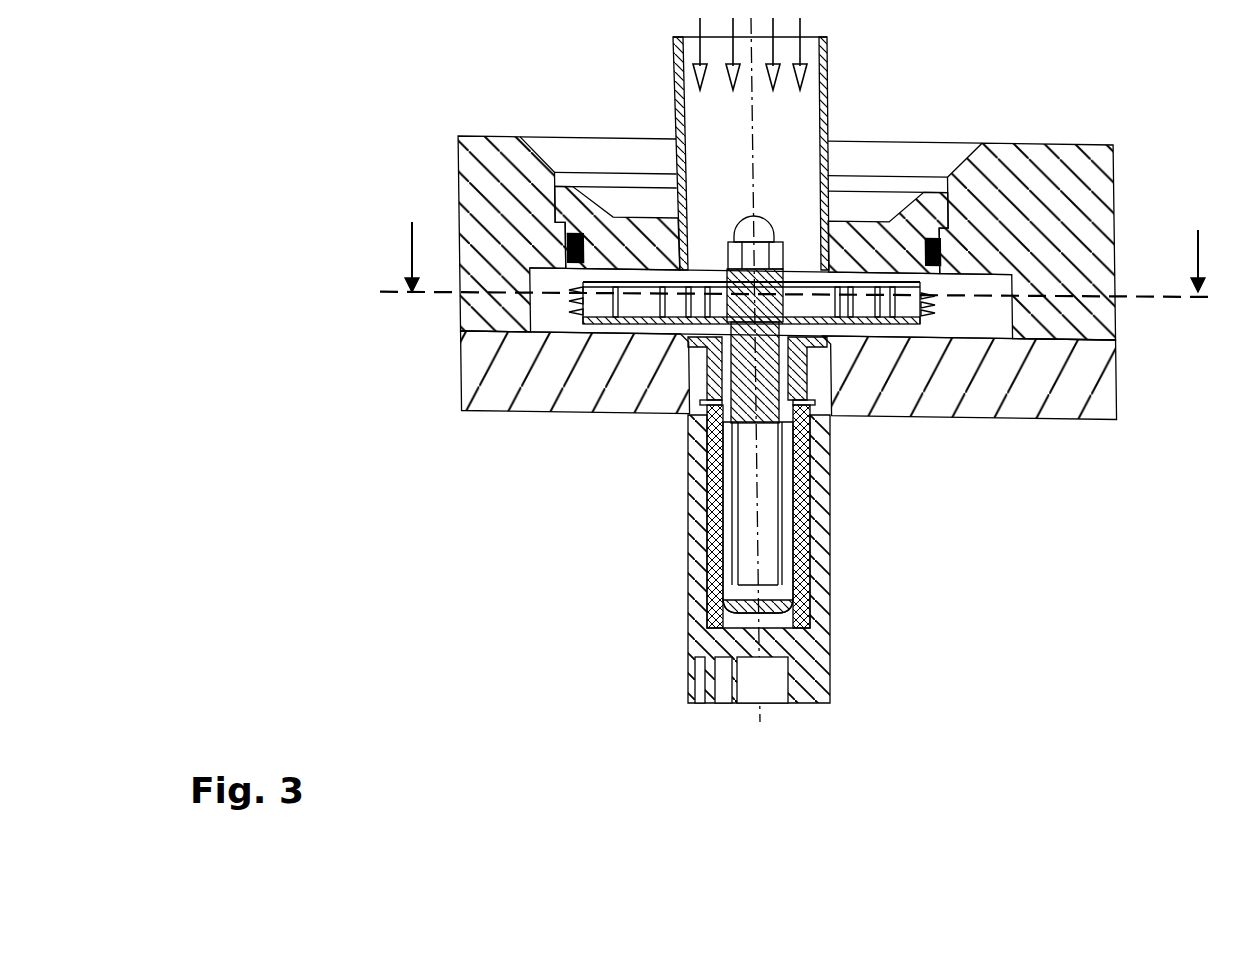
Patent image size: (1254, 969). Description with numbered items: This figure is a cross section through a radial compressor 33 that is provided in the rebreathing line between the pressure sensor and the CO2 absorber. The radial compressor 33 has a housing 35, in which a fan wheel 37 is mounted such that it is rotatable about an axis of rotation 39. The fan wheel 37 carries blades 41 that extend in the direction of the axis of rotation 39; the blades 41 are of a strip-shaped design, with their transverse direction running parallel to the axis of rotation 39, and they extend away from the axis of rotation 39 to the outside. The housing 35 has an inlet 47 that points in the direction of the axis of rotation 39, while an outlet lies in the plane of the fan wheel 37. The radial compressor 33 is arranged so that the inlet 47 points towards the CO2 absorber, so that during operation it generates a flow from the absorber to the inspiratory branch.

The radial compressor 33 is at (984, 88).
The housing 35 is at (1095, 176).
The fan wheel 37 is at (858, 325).
The axis of rotation 39 is at (762, 573).
The blades 41 is at (655, 330).
The inlet 47 is at (751, 144).